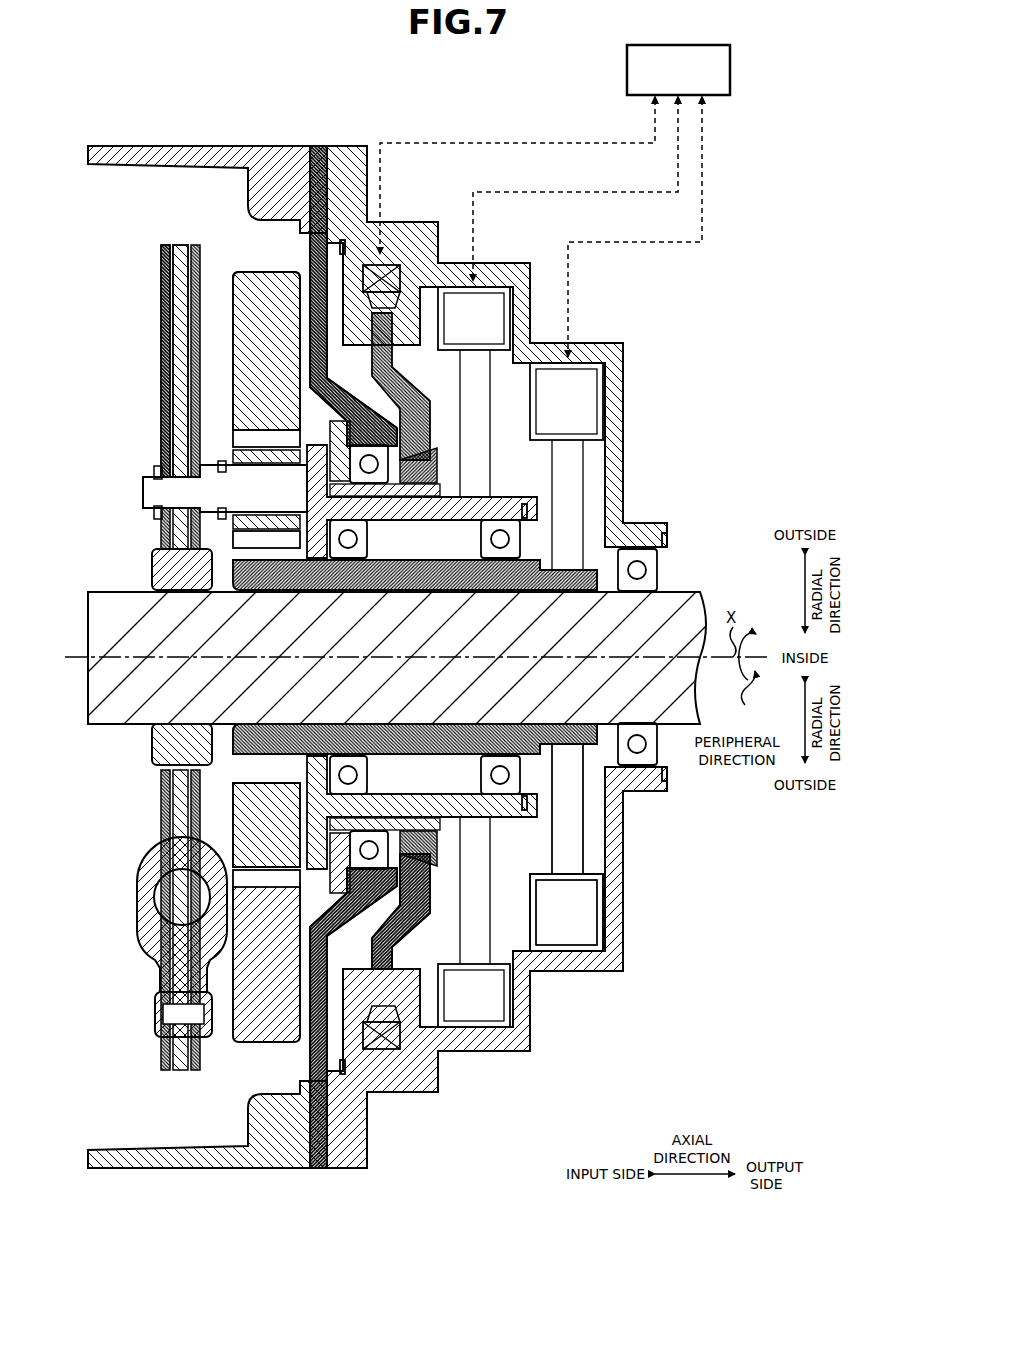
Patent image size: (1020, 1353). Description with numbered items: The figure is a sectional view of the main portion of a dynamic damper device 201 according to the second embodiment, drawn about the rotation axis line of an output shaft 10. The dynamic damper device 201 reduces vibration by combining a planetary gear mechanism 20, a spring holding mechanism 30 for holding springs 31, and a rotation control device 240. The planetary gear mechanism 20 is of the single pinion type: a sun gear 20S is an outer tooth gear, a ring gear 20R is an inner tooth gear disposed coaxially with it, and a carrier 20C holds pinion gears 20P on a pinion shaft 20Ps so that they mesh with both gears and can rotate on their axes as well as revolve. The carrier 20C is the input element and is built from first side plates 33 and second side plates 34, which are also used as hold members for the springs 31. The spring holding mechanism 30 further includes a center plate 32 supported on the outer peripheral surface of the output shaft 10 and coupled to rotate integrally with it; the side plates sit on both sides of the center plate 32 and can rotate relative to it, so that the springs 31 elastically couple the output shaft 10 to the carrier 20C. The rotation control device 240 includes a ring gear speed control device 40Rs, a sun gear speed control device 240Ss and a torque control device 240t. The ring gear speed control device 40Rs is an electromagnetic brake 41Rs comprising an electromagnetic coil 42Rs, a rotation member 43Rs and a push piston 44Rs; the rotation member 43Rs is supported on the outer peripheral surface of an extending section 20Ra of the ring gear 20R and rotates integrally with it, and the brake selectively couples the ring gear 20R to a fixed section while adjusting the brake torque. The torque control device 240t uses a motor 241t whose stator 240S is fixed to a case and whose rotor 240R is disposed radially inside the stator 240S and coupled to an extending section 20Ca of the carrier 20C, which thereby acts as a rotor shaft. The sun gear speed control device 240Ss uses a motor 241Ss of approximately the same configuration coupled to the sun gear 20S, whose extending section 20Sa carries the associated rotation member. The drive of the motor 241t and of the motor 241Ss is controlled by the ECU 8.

The output shaft 10 is at (107, 589).
The ECU 8 is at (732, 72).
The dynamic damper device 201 is at (429, 108).
The planetary gear mechanism 20 is at (242, 263).
The ring gear 20R is at (264, 269).
The carrier 20C is at (106, 262).
The first side plates 33 is at (166, 276).
The second side plates 34 is at (166, 317).
The pinion gears 20P is at (264, 443).
The pinion shaft 20Ps is at (224, 462).
The sun gear 20S is at (290, 475).
The extending section of the ring gear 20Ra is at (425, 478).
The extending section of the carrier 20Ca is at (432, 503).
The extending section of the sun gear 20Sa is at (455, 558).
The center plate 32 is at (172, 838).
The springs 31 is at (154, 903).
The spring holding mechanism 30 is at (133, 1056).
The rotation member 43Rs is at (318, 972).
The push piston 44Rs is at (310, 1040).
The electromagnetic coil 42Rs is at (384, 1045).
The electromagnetic brake 41Rs is at (433, 1105).
The ring gear speed control device 40Rs is at (497, 970).
The motor 241t is at (504, 1063).
The torque control device 240t is at (497, 967).
The stator 240S is at (477, 998).
The rotor 240R is at (478, 898).
The rotation control device 240 is at (643, 1047).
The motor 241Ss is at (631, 892).
The sun gear speed control device 240Ss is at (525, 967).